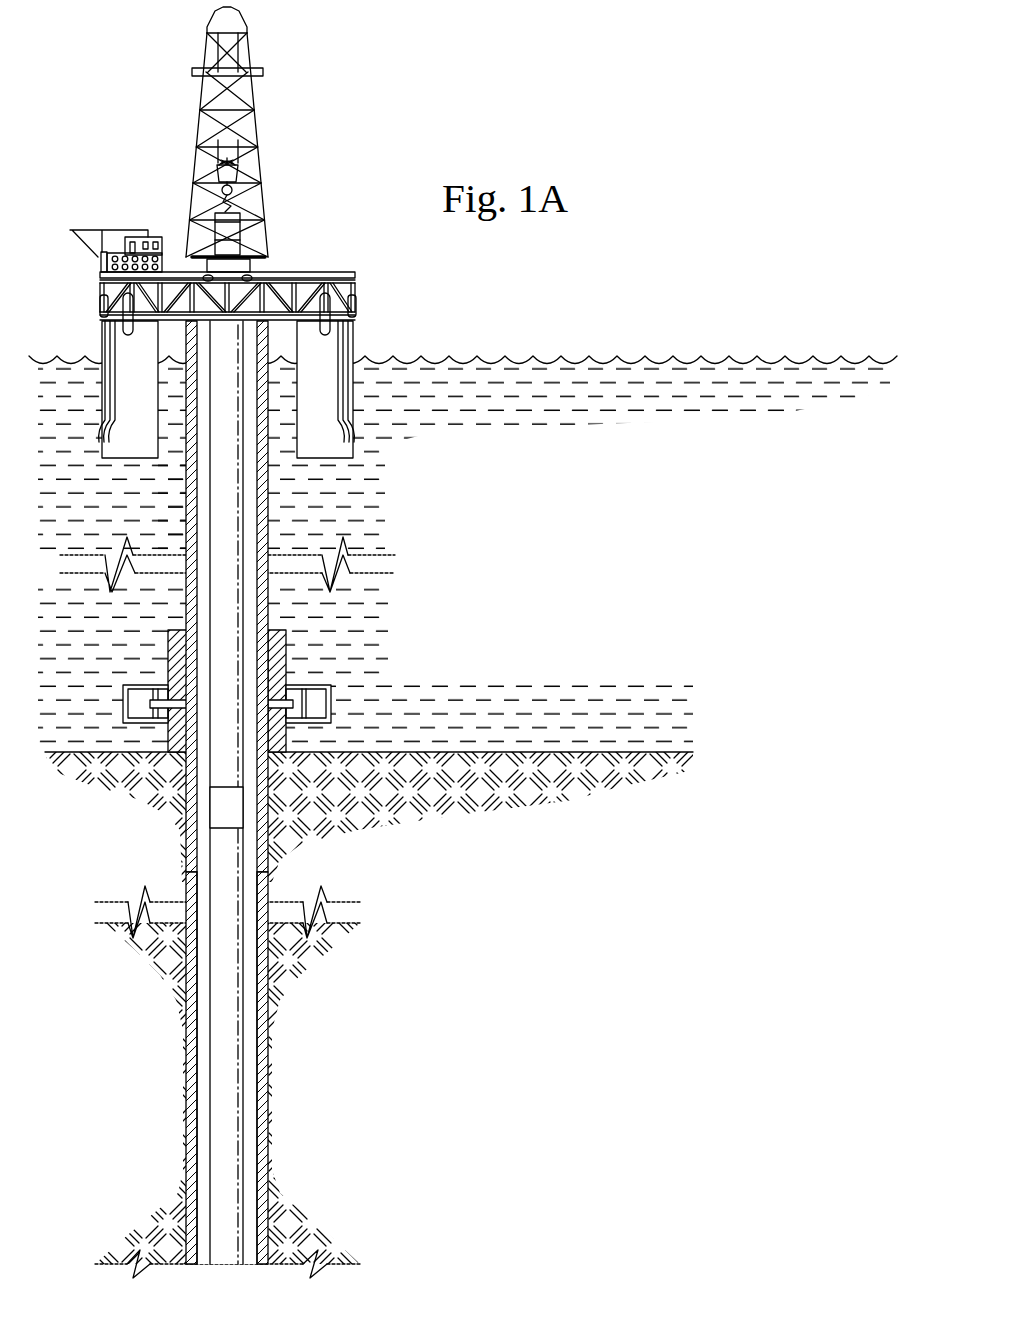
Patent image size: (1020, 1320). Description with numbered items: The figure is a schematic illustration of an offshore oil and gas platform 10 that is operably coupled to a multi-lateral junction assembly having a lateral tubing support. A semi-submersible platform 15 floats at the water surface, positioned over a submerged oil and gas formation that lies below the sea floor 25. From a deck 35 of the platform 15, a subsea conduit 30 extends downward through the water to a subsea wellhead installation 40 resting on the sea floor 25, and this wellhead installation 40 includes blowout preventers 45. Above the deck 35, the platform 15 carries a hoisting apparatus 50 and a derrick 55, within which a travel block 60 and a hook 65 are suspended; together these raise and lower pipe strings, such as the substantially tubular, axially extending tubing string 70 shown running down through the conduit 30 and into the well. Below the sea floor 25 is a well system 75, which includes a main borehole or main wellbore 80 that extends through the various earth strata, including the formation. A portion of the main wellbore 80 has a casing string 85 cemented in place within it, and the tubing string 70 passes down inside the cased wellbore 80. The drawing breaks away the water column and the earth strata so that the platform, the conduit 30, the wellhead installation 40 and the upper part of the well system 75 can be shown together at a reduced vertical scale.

The offshore oil and gas platform 10 is at (252, 232).
The semi-submersible platform 15 is at (345, 266).
The sea floor 25 is at (703, 751).
The subsea conduit 30 is at (270, 478).
The deck 35 is at (362, 318).
The subsea wellhead installation 40 is at (165, 664).
The blowout preventers 45 is at (316, 697).
The hoisting apparatus 50 is at (253, 244).
The derrick 55 is at (208, 48).
The travel block 60 is at (212, 176).
The hook 65 is at (221, 193).
The tubing string 70 is at (214, 862).
The well system 75 is at (473, 940).
The main wellbore 80 is at (254, 1058).
The casing string 85 is at (270, 1113).